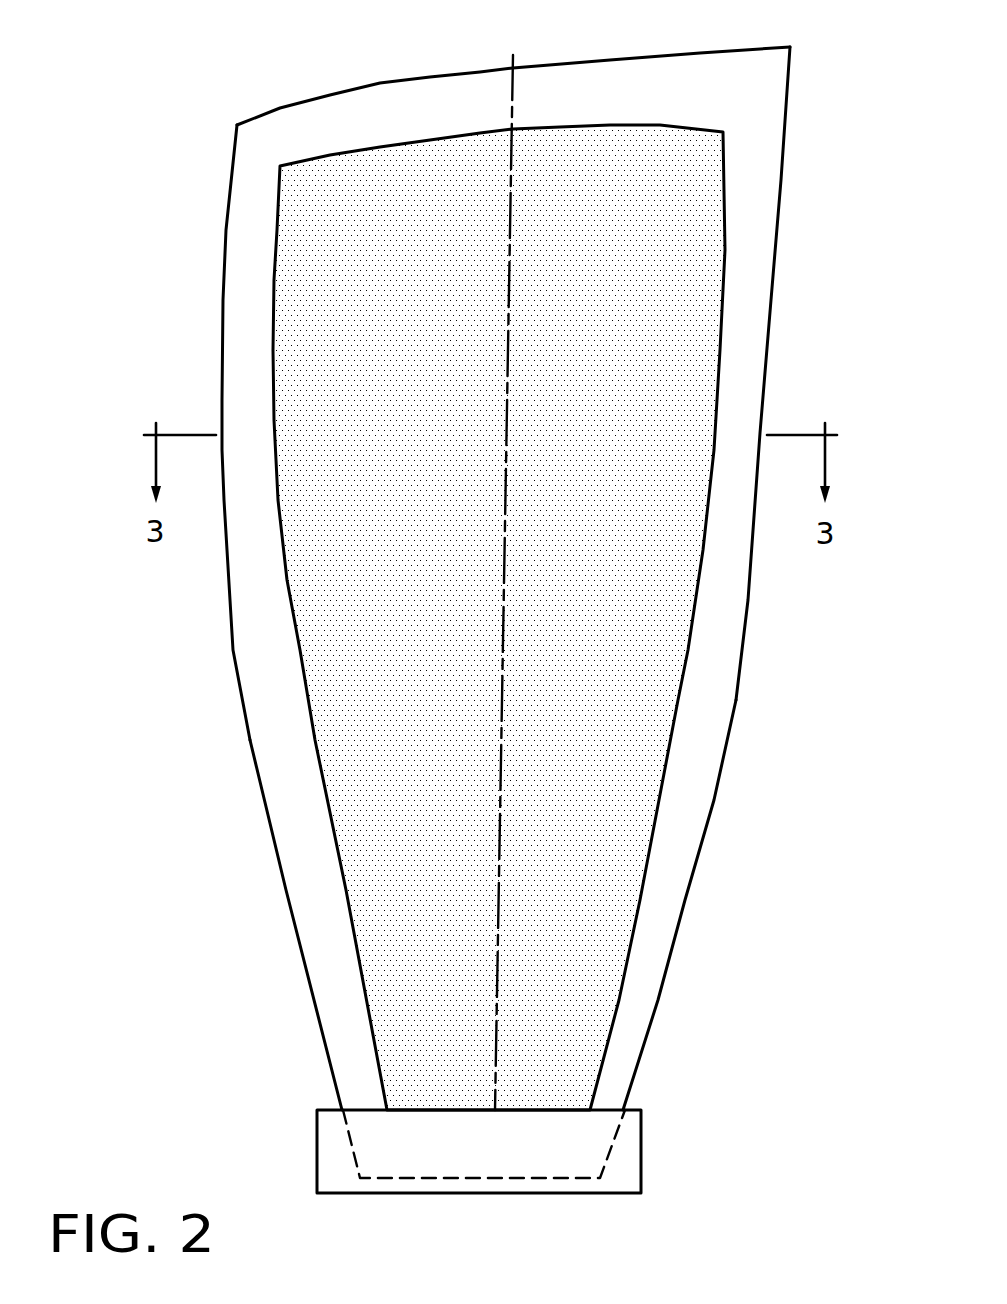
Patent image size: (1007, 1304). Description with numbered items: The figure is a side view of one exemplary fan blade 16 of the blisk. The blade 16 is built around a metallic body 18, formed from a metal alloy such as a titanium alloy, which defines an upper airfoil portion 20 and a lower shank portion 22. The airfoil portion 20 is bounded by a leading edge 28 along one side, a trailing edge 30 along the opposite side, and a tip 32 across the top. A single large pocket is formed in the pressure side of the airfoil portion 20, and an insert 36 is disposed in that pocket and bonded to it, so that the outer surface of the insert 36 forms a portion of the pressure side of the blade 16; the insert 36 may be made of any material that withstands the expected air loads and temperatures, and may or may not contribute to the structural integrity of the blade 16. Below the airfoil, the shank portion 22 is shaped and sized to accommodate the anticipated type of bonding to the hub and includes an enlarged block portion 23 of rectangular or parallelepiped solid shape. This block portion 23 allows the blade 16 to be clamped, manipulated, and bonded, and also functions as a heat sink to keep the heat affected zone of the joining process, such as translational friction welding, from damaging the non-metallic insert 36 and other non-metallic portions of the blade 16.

The blade 16 is at (243, 42).
The metallic body 18 is at (758, 214).
The airfoil portion 20 is at (213, 766).
The shank portion 22 is at (288, 1085).
The enlarged block portion 23 is at (317, 1151).
The leading edge 28 is at (773, 271).
The trailing edge 30 is at (223, 272).
The tip 32 is at (640, 57).
The insert 36 is at (671, 549).